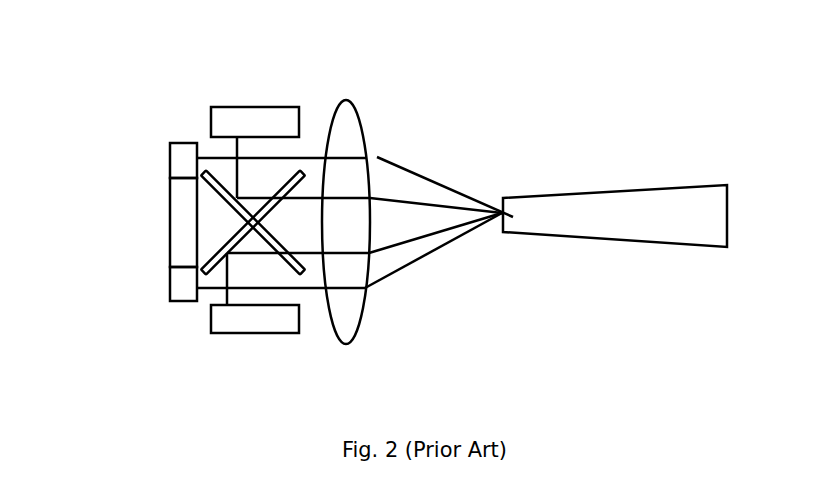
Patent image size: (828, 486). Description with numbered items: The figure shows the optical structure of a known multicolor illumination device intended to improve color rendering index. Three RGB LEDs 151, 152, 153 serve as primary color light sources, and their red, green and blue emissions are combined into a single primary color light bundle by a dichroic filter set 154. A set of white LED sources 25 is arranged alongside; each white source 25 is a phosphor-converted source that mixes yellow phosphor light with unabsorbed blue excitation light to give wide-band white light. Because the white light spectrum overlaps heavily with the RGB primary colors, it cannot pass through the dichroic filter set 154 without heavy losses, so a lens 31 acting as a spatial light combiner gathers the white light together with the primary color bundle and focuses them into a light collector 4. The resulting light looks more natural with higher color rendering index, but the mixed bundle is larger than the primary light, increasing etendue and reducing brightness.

The red LED 151 is at (213, 104).
The green LED 152 is at (168, 212).
The blue LED 153 is at (253, 334).
The dichroic filter set 154 is at (288, 182).
The white LED source 25 is at (168, 158).
The lens 31 is at (352, 127).
The light collector 4 is at (592, 195).